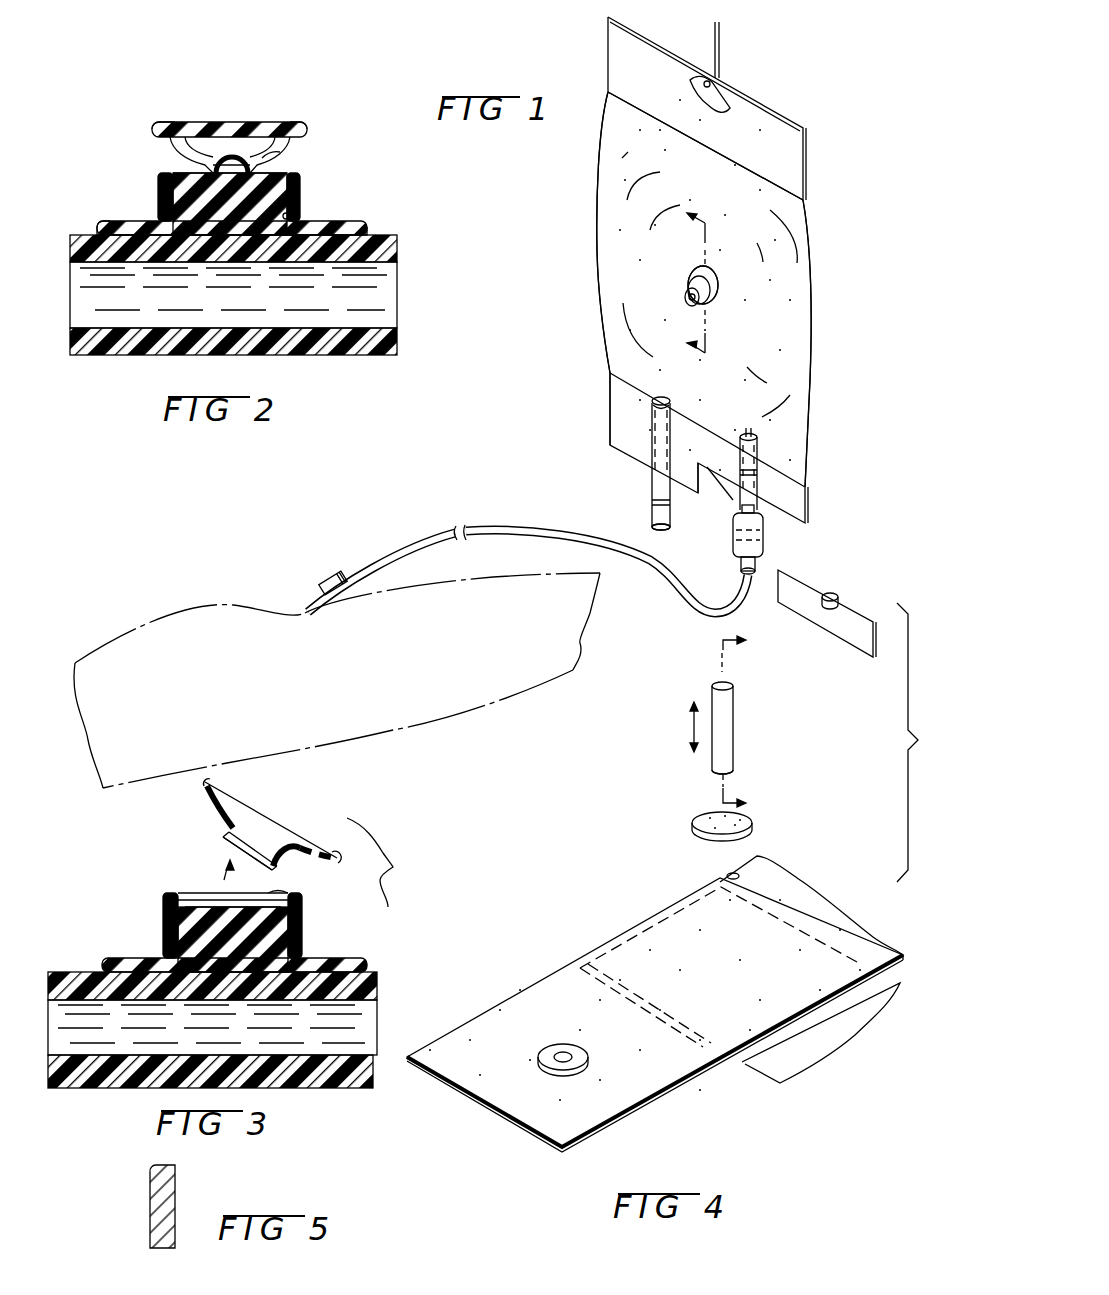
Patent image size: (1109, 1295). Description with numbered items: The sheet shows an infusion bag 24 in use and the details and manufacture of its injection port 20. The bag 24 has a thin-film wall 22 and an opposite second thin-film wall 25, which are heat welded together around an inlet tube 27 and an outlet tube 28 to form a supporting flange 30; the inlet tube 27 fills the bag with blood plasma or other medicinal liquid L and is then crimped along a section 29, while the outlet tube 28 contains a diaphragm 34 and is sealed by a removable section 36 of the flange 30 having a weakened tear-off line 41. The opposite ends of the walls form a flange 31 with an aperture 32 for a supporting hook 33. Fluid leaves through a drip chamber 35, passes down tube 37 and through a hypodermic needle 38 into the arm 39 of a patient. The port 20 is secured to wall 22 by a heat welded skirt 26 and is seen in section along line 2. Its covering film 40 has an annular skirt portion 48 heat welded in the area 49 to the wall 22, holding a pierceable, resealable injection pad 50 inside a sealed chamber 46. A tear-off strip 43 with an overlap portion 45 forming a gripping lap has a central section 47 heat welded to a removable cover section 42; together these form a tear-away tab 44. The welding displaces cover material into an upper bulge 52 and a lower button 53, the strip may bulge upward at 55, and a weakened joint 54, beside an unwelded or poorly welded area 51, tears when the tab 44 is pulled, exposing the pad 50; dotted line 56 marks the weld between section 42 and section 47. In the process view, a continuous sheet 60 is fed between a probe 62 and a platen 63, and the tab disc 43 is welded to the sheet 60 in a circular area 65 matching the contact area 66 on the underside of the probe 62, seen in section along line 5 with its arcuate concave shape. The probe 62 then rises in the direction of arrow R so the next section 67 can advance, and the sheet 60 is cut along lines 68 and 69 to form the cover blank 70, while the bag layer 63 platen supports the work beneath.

In FIG. 1, the section line 2— 2 is at (705, 291).
In FIG. 1, the section line 5— 5 is at (723, 717).
In FIG. 1, the injection port 20 is at (677, 285).
In FIG. 2, the injection port 20 is at (128, 158).
In FIG. 1, the wall 22 is at (798, 302).
In FIG. 2, the wall 22 is at (392, 250).
In FIG. 3, the wall 22 is at (370, 990).
In FIG. 1, the bag 24 is at (597, 312).
In FIG. 1, the second thin-film wall 25 is at (782, 337).
In FIG. 2, the second thin-film wall 25 is at (352, 357).
In FIG. 3, the second thin-film wall 25 is at (320, 1088).
In FIG. 1, the heat welded skirt 26 is at (718, 296).
In FIG. 1, the inlet tube 27 is at (653, 523).
In FIG. 1, the outlet tube 28 is at (733, 500).
In FIG. 1, the section 29 is at (655, 508).
In FIG. 1, the supporting flange 30 is at (617, 403).
In FIG. 1, the flange 31 is at (792, 152).
In FIG. 1, the aperture 32 is at (727, 108).
In FIG. 1, the supporting hook 33 is at (722, 44).
In FIG. 1, the diaphragm 34 is at (758, 485).
In FIG. 1, the drip chamber 35 is at (763, 532).
In FIG. 1, the removable section 36 is at (793, 600).
In FIG. 1, the tube 37 is at (410, 540).
In FIG. 1, the hypodermic needle 38 is at (327, 580).
In FIG. 1, the arm 39 is at (337, 680).
In FIG. 2, the covering film 40 is at (293, 207).
In FIG. 3, the covering film 40 is at (302, 943).
In FIG. 1, the weakened tear-off line 41 is at (792, 510).
In FIG. 2, the removable section 42 is at (222, 122).
In FIG. 3, the removable section 42 is at (227, 847).
In FIG. 1, the tear-off strip 43 is at (747, 820).
In FIG. 2, the tear-off strip 43 is at (192, 122).
In FIG. 2, the tear-away tab 44 is at (241, 98).
In FIG. 3, the tear-away tab 44 is at (287, 803).
In FIG. 2, the overlap portion 45 is at (298, 122).
In FIG. 2, the sealed chamber 46 is at (297, 222).
In FIG. 3, the sealed chamber 46 is at (173, 957).
In FIG. 2, the central section 47 is at (247, 150).
In FIG. 3, the central section 47 is at (248, 827).
In FIG. 2, the annular skirt portion 48 is at (102, 221).
In FIG. 2, the area 49 is at (100, 232).
In FIG. 2, the injection pad 50 is at (300, 200).
In FIG. 3, the injection pad 50 is at (283, 930).
In FIG. 2, the unwelded or poorly welded area 51 is at (207, 163).
In FIG. 3, the unwelded or poorly welded area 51 is at (203, 892).
In FIG. 2, the upper bulge 52 is at (275, 158).
In FIG. 3, the upper bulge 52 is at (270, 890).
In FIG. 2, the lower button 53 is at (185, 200).
In FIG. 2, the weakened connection or joint 54 is at (263, 167).
In FIG. 3, the weakened connection or joint 54 is at (230, 902).
In FIG. 2, the bulge 55 is at (232, 145).
In FIG. 3, the dotted line 56 is at (230, 842).
In FIG. 4, the continuous sheet 60 is at (805, 900).
In FIG. 1, the probe 62 is at (733, 718).
In FIG. 4, the platen 63 is at (776, 1062).
In FIG. 4, the circular area 65 is at (557, 1050).
In FIG. 1, the contact area 66 is at (712, 775).
In FIG. 5, the contact area 66 is at (168, 1248).
In FIG. 4, the next section 67 is at (627, 928).
In FIG. 4, the line 68 is at (587, 973).
In FIG. 4, the line 69 is at (728, 878).
In FIG. 4, the cover piece or blank 70 is at (637, 1103).
In FIG. 2, the medicinal liquid L is at (395, 295).
In FIG. 3, the medicinal liquid L is at (365, 1023).
In FIG. 1, the arrow R is at (694, 727).